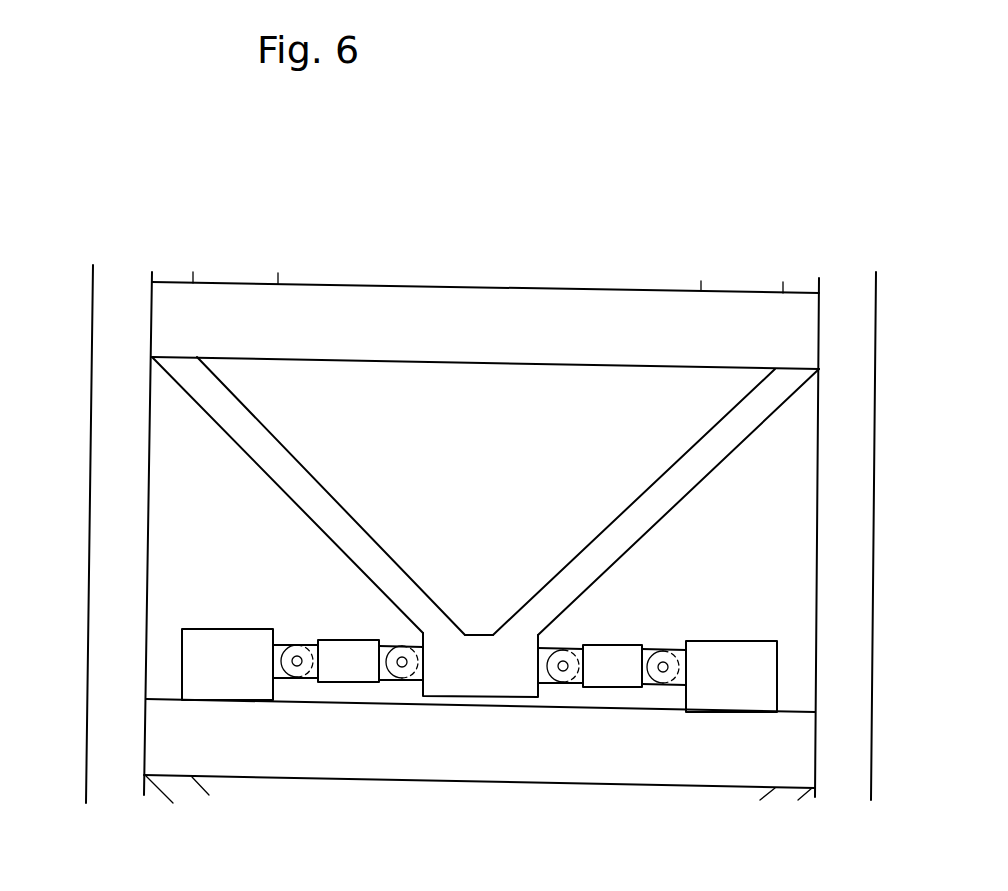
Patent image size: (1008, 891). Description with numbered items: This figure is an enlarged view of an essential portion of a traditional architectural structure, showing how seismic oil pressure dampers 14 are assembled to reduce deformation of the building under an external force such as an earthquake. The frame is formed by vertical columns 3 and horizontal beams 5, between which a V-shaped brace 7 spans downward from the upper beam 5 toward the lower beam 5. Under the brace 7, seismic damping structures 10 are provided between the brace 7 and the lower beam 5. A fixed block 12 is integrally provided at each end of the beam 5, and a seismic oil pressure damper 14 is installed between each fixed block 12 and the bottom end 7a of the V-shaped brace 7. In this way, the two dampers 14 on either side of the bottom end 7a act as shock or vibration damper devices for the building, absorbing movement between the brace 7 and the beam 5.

The column 3 is at (112, 513).
The beam 5 is at (530, 308).
The V-shaped brace 7 is at (305, 488).
The bottom end of the V-shaped brace 7a is at (472, 678).
The seismic damping structure 10 is at (275, 603).
The fixed block 12 is at (225, 677).
The seismic oil pressure damper 14 is at (352, 670).